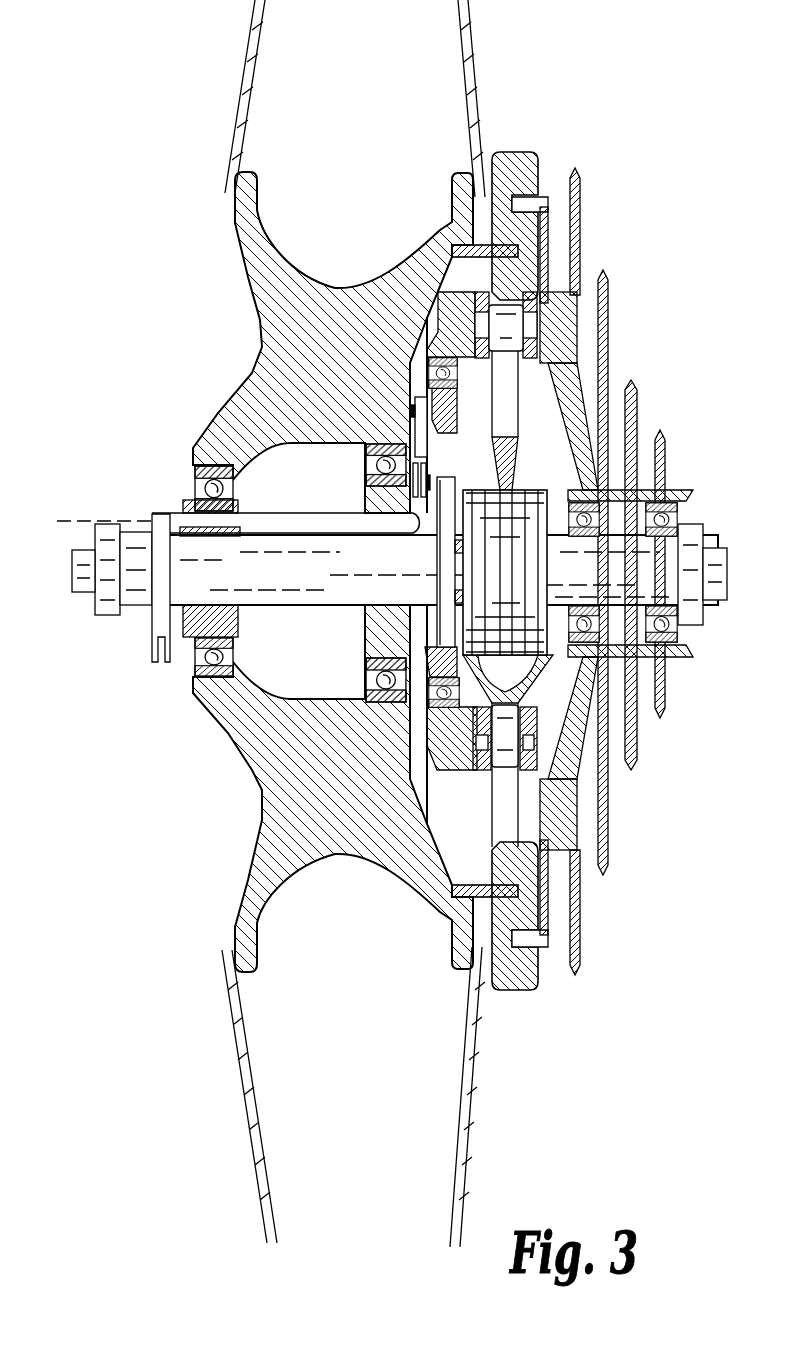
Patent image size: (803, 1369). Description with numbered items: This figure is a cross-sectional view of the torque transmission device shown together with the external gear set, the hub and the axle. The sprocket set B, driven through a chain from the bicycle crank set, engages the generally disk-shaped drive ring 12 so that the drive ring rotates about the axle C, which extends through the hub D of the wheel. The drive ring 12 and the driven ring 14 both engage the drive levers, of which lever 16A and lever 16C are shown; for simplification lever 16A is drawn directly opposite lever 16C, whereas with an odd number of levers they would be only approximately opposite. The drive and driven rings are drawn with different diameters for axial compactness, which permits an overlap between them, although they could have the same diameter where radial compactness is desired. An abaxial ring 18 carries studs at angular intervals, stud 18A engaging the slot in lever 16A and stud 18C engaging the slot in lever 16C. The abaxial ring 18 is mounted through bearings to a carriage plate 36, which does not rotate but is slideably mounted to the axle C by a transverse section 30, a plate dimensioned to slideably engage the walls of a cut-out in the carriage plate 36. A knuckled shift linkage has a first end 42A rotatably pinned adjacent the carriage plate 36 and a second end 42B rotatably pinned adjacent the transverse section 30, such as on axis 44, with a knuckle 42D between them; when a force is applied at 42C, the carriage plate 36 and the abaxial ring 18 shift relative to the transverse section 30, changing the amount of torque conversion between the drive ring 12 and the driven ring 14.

The drive ring 12 is at (530, 200).
The driven ring 14 is at (462, 257).
The drive lever 16A is at (512, 152).
The drive lever 16C is at (510, 995).
The abaxial ring 18 is at (440, 752).
The stud 18A is at (505, 340).
The stud 18C is at (505, 755).
The transverse section 30 is at (450, 587).
The carriage plate 36 is at (453, 418).
The first end of shift linkage 42A is at (418, 412).
The second end of shift linkage 42B is at (418, 540).
The force application point of shift linkage 42C is at (158, 617).
The knuckle 42D is at (432, 463).
The axis 44 is at (82, 520).
The sprocket set B is at (667, 402).
The axle C is at (302, 584).
The hub D is at (331, 797).